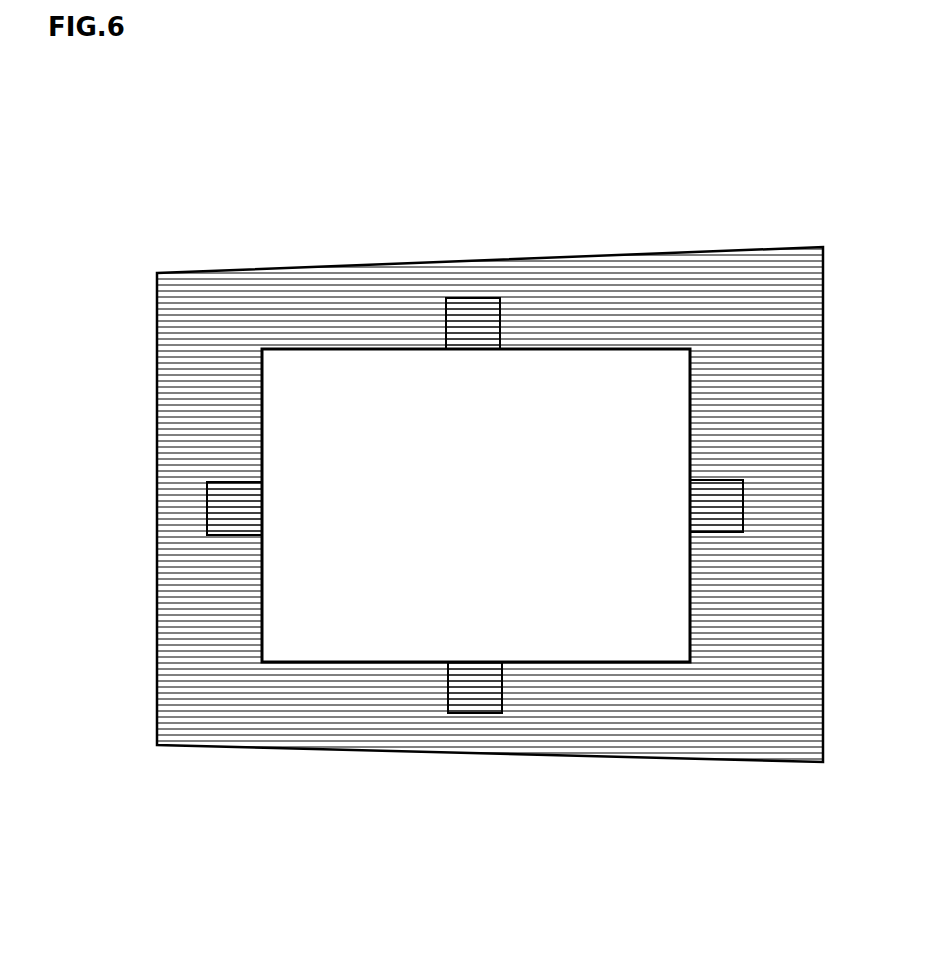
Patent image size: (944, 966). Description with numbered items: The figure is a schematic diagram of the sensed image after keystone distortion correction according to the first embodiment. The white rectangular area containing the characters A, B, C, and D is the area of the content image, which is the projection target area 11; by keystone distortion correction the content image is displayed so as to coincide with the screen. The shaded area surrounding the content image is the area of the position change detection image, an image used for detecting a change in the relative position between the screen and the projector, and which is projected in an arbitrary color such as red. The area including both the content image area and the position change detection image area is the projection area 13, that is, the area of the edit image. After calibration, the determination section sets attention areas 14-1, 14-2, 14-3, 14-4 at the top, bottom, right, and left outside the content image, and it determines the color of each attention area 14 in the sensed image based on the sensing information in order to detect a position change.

The projection target area 11 is at (543, 349).
The projection area 13 is at (682, 250).
The attention area 14 is at (511, 506).
The attention area 14-1 is at (230, 482).
The attention area 14-2 is at (466, 298).
The attention area 14-3 is at (724, 480).
The attention area 14-4 is at (482, 713).